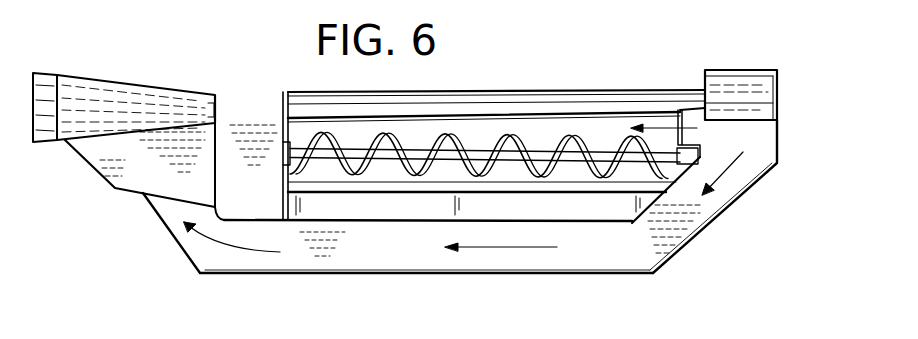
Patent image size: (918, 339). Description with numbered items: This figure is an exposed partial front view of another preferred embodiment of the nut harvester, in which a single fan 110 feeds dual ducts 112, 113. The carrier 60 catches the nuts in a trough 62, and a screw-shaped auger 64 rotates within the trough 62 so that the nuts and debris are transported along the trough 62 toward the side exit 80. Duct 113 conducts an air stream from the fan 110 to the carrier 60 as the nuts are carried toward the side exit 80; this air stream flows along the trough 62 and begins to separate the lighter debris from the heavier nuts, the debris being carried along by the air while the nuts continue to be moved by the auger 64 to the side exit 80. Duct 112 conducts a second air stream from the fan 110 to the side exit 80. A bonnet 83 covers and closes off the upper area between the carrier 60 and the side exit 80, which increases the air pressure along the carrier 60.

The carrier 60 is at (592, 138).
The trough 62 is at (492, 133).
The screw-shaped auger 64 is at (448, 133).
The side exit 80 is at (147, 174).
The bonnet 83 is at (162, 83).
The fan 110 is at (762, 90).
The duct 112 is at (712, 198).
The duct 113 is at (693, 113).